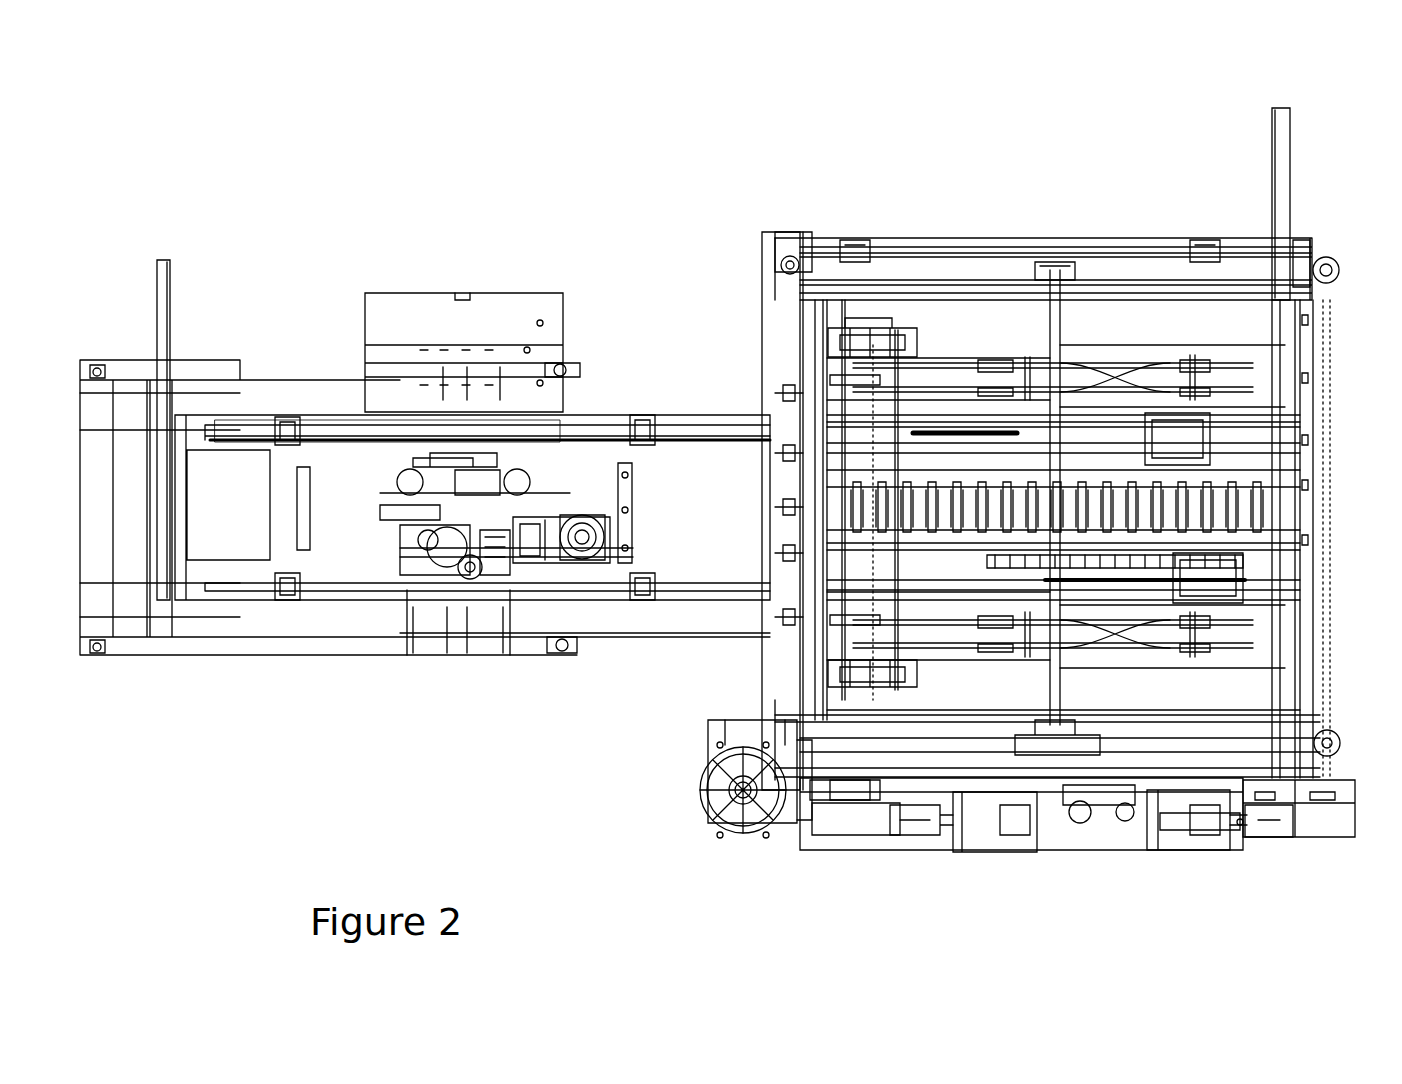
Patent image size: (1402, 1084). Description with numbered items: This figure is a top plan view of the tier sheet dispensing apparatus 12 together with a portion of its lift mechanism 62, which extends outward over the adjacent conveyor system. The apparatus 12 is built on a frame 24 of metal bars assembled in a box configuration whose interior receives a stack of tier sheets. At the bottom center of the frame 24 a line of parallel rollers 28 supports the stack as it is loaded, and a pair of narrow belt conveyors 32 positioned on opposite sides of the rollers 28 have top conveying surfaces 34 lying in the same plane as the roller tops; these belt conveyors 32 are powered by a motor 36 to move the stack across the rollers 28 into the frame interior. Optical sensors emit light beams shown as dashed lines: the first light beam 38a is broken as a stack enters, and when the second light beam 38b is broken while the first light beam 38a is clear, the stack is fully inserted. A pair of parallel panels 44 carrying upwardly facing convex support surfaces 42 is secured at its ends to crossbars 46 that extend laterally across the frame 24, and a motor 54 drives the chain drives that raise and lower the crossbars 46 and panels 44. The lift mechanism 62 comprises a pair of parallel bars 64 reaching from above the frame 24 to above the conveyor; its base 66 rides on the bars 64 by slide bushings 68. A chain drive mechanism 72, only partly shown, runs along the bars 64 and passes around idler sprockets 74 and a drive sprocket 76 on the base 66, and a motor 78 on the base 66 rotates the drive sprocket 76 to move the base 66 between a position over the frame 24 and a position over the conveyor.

The tier sheet dispensing apparatus 12 is at (938, 165).
The frame 24 is at (1025, 242).
The rollers 28 is at (875, 240).
The belt conveyors 32 is at (972, 355).
The top conveying surfaces 34 is at (938, 375).
The motor 36 is at (1010, 840).
The first light beam 38a is at (1328, 348).
The second light beam 38b is at (790, 455).
The support surfaces 42 is at (1085, 415).
The panels 44 is at (1105, 420).
The crossbars 46 is at (1290, 600).
The motor 54 is at (703, 808).
The lift mechanism 62 is at (340, 622).
The parallel bars 64 is at (238, 432).
The lift mechanism base 66 is at (330, 470).
The slide bushings 68 is at (285, 420).
The chain drive mechanism 72 is at (520, 572).
The idler sprockets 74 is at (528, 563).
The drive sprocket 76 is at (572, 570).
The motor 78 is at (580, 510).